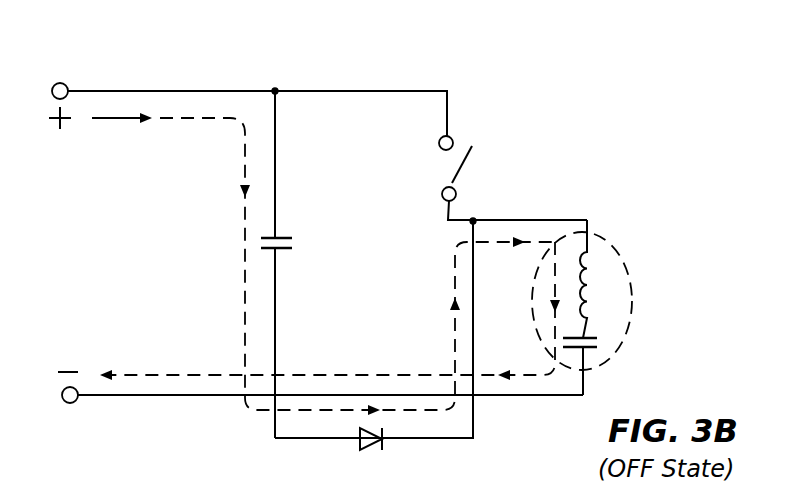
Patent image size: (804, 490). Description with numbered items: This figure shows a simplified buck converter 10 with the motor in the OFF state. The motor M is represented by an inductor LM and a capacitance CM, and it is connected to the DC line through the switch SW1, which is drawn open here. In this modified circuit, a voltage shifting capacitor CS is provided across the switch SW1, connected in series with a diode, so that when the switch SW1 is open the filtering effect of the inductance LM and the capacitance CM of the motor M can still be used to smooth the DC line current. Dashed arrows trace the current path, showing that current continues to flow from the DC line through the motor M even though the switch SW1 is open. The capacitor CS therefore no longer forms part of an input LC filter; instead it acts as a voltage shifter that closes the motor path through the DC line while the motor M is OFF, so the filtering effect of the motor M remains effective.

The buck converter 10 is at (115, 73).
The voltage shifting capacitor CS is at (293, 264).
The switch SW1 is at (513, 178).
The motor M is at (609, 307).
The inductor LM is at (586, 300).
The capacitance CM is at (600, 351).